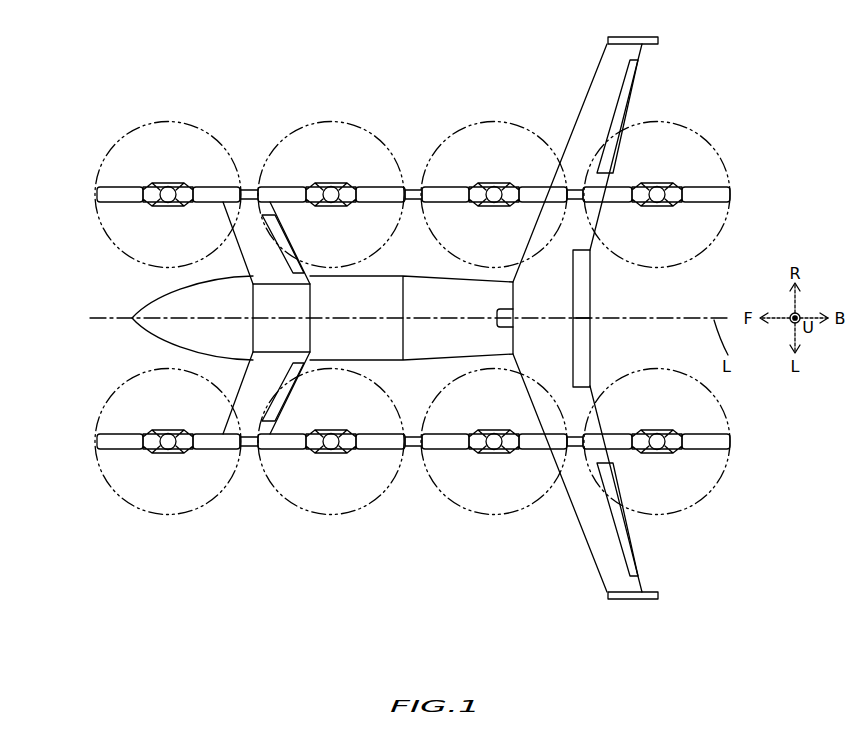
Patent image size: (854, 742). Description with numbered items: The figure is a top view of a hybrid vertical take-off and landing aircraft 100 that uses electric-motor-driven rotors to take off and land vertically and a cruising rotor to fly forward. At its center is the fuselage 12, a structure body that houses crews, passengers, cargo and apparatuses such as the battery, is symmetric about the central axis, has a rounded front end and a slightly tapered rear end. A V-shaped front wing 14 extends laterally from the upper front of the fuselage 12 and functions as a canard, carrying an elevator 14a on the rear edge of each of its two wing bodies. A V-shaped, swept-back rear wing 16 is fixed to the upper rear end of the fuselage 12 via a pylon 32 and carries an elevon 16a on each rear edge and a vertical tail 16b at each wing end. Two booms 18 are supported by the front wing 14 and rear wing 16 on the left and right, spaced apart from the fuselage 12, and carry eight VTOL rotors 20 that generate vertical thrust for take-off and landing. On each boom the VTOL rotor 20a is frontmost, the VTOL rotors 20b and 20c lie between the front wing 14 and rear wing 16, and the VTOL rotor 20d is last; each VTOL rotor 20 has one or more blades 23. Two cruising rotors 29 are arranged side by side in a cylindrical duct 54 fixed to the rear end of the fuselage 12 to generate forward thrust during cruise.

The aircraft 100 is at (56, 46).
The fuselage 12 is at (152, 307).
The front wing 14 is at (264, 318).
The elevator 14a is at (290, 241).
The rear wing 16 is at (618, 317).
The elevon 16a is at (633, 87).
The vertical tail 16b is at (658, 40).
The boom 18 is at (248, 187).
The VTOL rotor 20 is at (398, 318).
The VTOL rotor 20a is at (155, 172).
The VTOL rotor 20b is at (347, 166).
The VTOL rotor 20c is at (485, 166).
The VTOL rotor 20d is at (672, 170).
The blade 23 is at (384, 318).
The cruising rotor 29 is at (594, 285).
The pylon 32 is at (502, 308).
The duct 54 is at (624, 316).